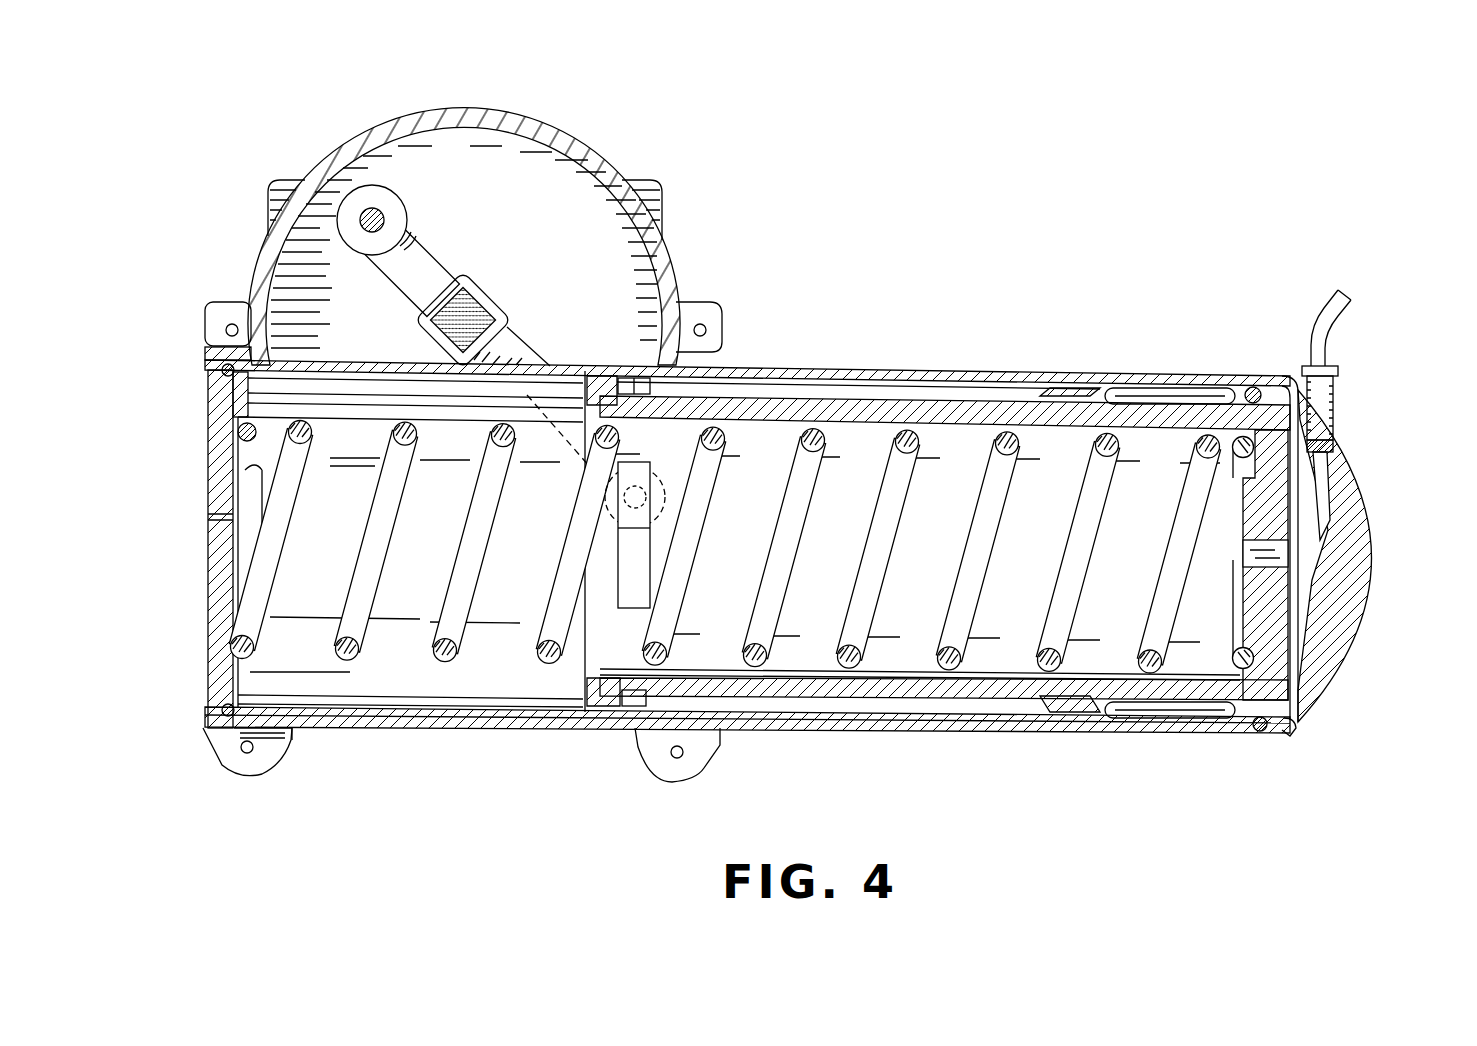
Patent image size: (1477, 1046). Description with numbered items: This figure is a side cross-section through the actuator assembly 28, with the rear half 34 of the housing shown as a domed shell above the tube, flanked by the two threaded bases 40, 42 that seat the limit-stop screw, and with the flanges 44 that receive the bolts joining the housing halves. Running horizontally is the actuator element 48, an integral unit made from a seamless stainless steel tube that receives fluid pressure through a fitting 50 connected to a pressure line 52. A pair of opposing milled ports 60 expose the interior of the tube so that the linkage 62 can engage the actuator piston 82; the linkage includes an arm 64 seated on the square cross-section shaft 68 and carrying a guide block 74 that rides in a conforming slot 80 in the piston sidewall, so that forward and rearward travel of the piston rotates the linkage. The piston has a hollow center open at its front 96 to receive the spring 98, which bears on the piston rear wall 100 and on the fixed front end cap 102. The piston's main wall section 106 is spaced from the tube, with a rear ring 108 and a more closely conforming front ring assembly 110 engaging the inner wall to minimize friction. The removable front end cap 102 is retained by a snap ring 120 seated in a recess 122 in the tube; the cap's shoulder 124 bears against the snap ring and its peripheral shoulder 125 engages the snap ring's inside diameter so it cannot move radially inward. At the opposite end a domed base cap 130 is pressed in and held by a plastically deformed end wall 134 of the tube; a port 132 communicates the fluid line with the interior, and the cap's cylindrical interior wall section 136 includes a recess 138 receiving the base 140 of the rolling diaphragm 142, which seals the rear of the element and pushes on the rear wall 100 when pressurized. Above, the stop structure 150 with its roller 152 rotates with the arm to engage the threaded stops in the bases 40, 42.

The actuator assembly 28 is at (518, 234).
The rear half 34 is at (575, 165).
The threaded base 40 is at (283, 180).
The threaded base 42 is at (665, 190).
The flanges 44 is at (212, 310).
The actuator element 48 is at (957, 366).
The fitting 50 is at (1338, 402).
The pressure line 52 is at (1340, 325).
The milled ports 60 is at (532, 563).
The linkage 62 is at (540, 345).
The arm 64 is at (510, 348).
The square cross-section shaft 68 is at (463, 320).
The guide block 74 is at (637, 466).
The slots 80 is at (588, 700).
The actuator piston 82 is at (733, 655).
The front 96 is at (578, 660).
The spring 98 is at (888, 440).
The rear wall 100 is at (1268, 607).
The front end cap 102 is at (228, 633).
The main wall section 106 is at (925, 690).
The rear ring 108 is at (1065, 722).
The front ring assembly 110 is at (627, 703).
The snap ring 120 is at (222, 370).
The recess 122 is at (205, 352).
The shoulder 124 is at (222, 743).
The peripheral shoulder 125 is at (225, 710).
The base cap 130 is at (1352, 558).
The port 132 is at (1318, 477).
The plastically deformed end wall 134 is at (1292, 720).
The interior wall section 136 is at (1293, 735).
The recess 138 is at (1262, 731).
The base 140 is at (1253, 387).
The rolling diaphragm 142 is at (1138, 388).
The stop structure 150 is at (435, 261).
The roller 152 is at (392, 212).